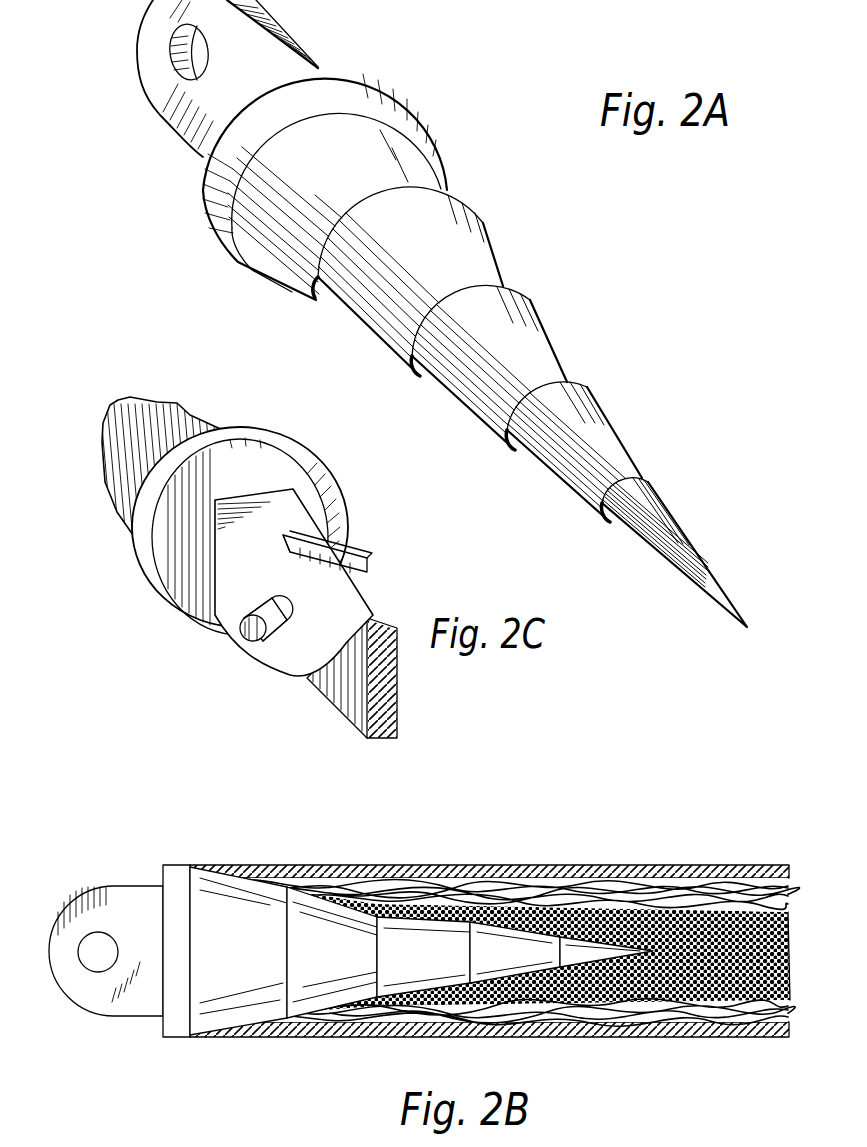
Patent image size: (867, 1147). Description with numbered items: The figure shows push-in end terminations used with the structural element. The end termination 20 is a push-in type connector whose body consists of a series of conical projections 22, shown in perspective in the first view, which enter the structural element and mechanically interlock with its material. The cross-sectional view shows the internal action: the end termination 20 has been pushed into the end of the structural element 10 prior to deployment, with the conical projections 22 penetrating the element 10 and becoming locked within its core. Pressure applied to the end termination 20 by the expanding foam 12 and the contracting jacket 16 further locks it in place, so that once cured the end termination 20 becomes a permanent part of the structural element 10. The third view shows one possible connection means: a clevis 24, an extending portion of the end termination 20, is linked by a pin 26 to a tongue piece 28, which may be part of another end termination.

In FIG. 2B, the structural element 10 is at (424, 918).
In FIG. 2B, the expanding foam 12 is at (684, 980).
In FIG. 2B, the contracting jacket 16 is at (637, 865).
In FIG. 2A, the end termination 20 is at (442, 313).
In FIG. 2C, the end termination 20 is at (228, 567).
In FIG. 2B, the end termination 20 is at (351, 926).
In FIG. 2A, the conical projections 22 is at (485, 222).
In FIG. 2B, the conical projections 22 is at (323, 893).
In FIG. 2C, the clevis 24 is at (254, 580).
In FIG. 2C, the pin 26 is at (253, 638).
In FIG. 2C, the tongue piece 28 is at (330, 698).